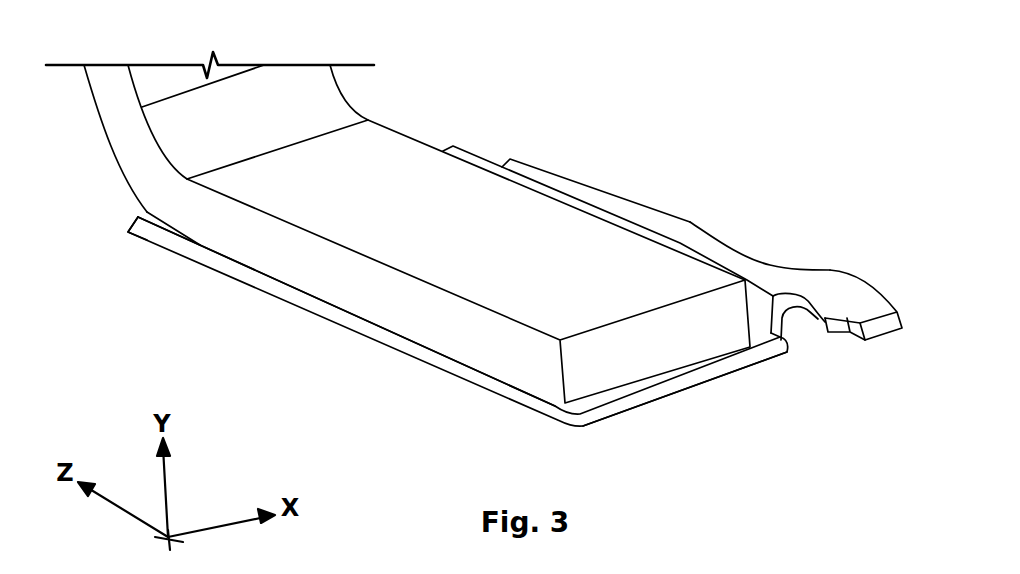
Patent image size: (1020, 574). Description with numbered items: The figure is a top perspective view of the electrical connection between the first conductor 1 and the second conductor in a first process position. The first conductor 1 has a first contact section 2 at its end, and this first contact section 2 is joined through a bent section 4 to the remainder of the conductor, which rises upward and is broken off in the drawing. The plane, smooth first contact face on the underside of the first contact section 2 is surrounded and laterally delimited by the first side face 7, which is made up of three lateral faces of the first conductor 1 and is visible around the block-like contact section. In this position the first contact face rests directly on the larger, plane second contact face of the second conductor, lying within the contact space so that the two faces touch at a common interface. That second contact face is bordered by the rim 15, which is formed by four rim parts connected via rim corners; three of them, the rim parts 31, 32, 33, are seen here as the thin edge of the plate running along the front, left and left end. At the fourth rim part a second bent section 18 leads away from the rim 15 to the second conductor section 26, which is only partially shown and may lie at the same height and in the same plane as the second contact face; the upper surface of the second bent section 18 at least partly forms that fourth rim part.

The first conductor 1 is at (449, 97).
The first contact section 2 is at (512, 213).
The bent section 4 is at (163, 78).
The first side face 7 is at (608, 200).
The rim 15 is at (405, 301).
The second bent section 18 is at (720, 254).
The second conductor section 26 is at (843, 290).
The rim part 31 is at (680, 392).
The rim part 32 is at (360, 300).
The rim part 33 is at (147, 212).